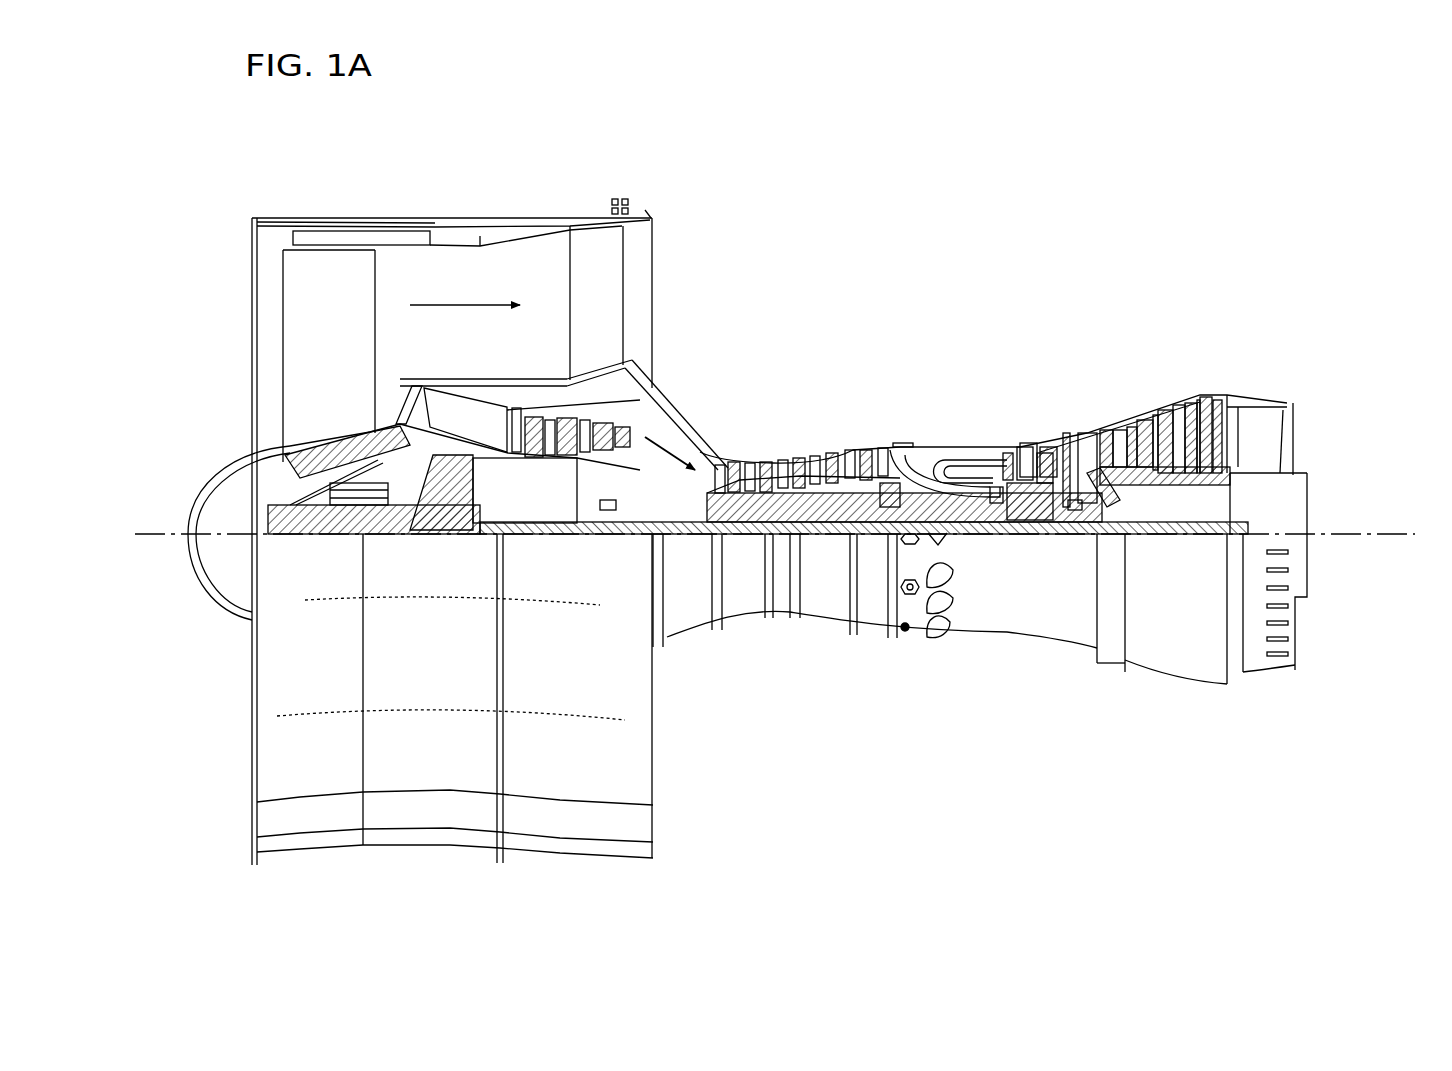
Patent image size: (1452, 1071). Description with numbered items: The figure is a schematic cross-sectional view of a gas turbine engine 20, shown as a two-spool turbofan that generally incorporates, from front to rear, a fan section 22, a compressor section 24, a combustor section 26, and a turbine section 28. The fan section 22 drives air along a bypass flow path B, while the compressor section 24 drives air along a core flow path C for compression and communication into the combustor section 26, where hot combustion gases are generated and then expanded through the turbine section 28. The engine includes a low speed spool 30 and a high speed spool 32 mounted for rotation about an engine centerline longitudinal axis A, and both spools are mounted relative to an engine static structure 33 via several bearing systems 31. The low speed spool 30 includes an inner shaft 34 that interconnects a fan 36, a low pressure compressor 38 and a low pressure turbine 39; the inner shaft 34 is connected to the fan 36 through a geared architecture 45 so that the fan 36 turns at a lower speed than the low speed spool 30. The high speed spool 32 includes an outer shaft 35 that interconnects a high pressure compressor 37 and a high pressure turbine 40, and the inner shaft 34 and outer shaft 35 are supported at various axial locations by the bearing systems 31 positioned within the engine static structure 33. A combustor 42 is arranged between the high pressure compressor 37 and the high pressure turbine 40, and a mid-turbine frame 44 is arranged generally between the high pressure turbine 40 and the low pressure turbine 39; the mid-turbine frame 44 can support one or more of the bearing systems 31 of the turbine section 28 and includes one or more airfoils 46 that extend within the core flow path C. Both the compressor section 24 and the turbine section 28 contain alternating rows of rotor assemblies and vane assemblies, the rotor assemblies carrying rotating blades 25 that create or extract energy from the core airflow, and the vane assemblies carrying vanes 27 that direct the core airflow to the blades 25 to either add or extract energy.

The gas turbine engine 20 is at (965, 272).
The fan section 22 is at (376, 212).
The compressor section 24 is at (707, 428).
The blades 25 is at (540, 440).
The combustor section 26 is at (958, 417).
The vanes 27 is at (565, 430).
The turbine section 28 is at (1119, 378).
The low speed spool 30 is at (826, 548).
The bearing systems 31 is at (372, 528).
The high speed spool 32 is at (878, 455).
The engine static structure 33 is at (871, 637).
The inner shaft 34 is at (675, 540).
The outer shaft 35 is at (965, 527).
The fan 36 is at (349, 362).
The high pressure compressor 37 is at (800, 480).
The low pressure compressor 38 is at (608, 373).
The low pressure turbine 39 is at (1172, 420).
The high pressure turbine 40 is at (1028, 440).
The combustor 42 is at (960, 462).
The mid-turbine frame 44 is at (1078, 432).
The geared architecture 45 is at (460, 503).
The airfoils 46 is at (1107, 487).
The engine centerline longitudinal axis A is at (1400, 534).
The bypass flow path B is at (455, 308).
The core flow path C is at (672, 448).